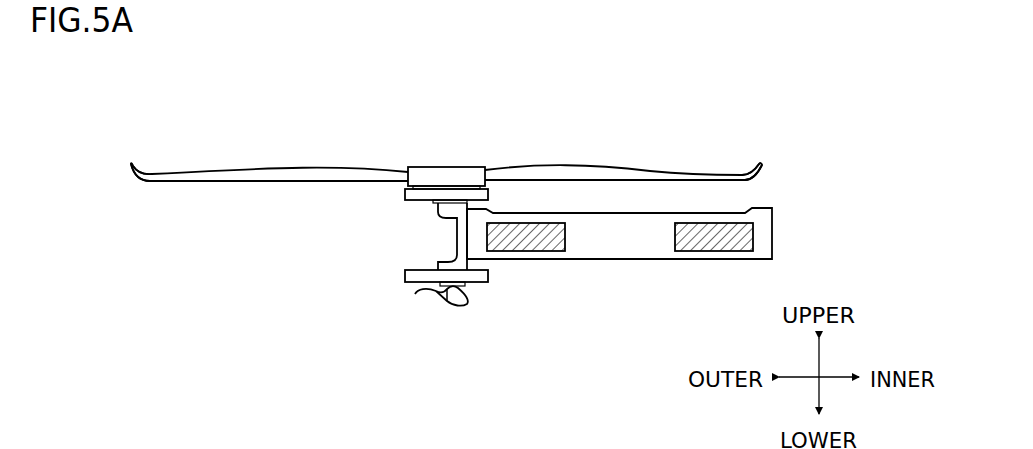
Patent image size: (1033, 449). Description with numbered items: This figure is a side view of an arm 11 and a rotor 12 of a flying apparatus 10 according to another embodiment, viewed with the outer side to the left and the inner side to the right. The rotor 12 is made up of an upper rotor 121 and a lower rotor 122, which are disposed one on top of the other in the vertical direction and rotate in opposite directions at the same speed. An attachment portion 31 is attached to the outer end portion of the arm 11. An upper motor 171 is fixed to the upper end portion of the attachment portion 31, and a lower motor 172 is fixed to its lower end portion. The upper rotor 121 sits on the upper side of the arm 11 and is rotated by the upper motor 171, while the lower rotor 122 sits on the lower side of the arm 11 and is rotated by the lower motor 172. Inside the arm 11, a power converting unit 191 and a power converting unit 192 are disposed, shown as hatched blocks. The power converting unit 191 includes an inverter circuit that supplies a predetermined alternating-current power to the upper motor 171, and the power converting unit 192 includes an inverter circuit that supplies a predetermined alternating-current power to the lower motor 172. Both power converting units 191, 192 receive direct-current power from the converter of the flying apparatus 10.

The flying apparatus 10 is at (441, 107).
The rotor 12 is at (212, 139).
The upper rotor 121 is at (268, 167).
The upper motor 171 is at (403, 202).
The attachment portion 31 is at (453, 237).
The lower motor 172 is at (407, 275).
The lower rotor 122 is at (415, 294).
The arm 11 is at (627, 260).
The power converting unit 191 is at (532, 252).
The power converting unit 192 is at (720, 252).